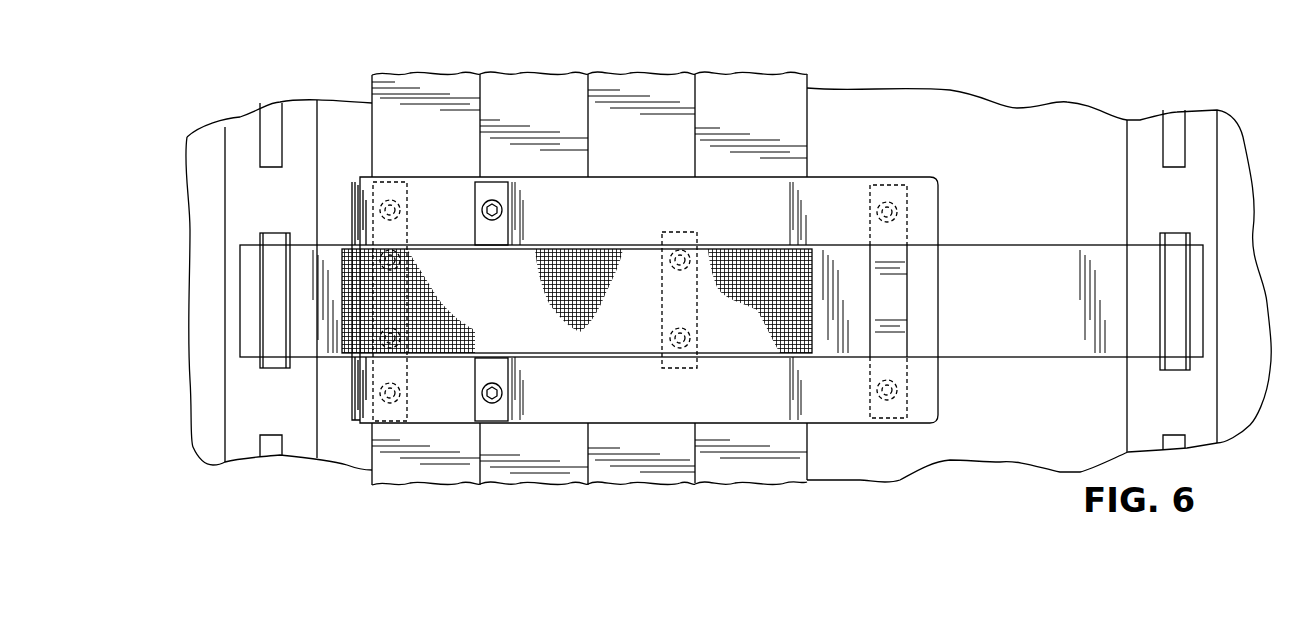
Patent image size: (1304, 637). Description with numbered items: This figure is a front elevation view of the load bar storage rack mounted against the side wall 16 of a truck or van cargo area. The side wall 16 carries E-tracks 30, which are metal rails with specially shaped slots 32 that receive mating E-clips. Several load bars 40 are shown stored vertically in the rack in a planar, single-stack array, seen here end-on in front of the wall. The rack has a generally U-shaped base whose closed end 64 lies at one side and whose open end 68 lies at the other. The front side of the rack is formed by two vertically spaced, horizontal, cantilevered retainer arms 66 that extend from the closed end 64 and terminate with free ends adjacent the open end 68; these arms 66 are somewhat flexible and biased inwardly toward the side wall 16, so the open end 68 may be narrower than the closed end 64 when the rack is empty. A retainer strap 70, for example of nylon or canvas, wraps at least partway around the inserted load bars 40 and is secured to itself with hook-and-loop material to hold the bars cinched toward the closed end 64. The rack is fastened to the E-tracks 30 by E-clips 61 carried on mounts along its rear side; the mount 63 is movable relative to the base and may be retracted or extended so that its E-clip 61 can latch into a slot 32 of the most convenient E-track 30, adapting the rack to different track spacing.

The side wall 16 is at (923, 110).
The E-track 30 is at (245, 147).
The slot 32 is at (280, 118).
The load bar 40 is at (423, 108).
The E-clip 61 is at (260, 293).
The mount 63 is at (1030, 270).
The closed end 64 is at (365, 193).
The front retainer arm 66 is at (837, 200).
The open end 68 is at (933, 297).
The retainer strap 70 is at (727, 328).